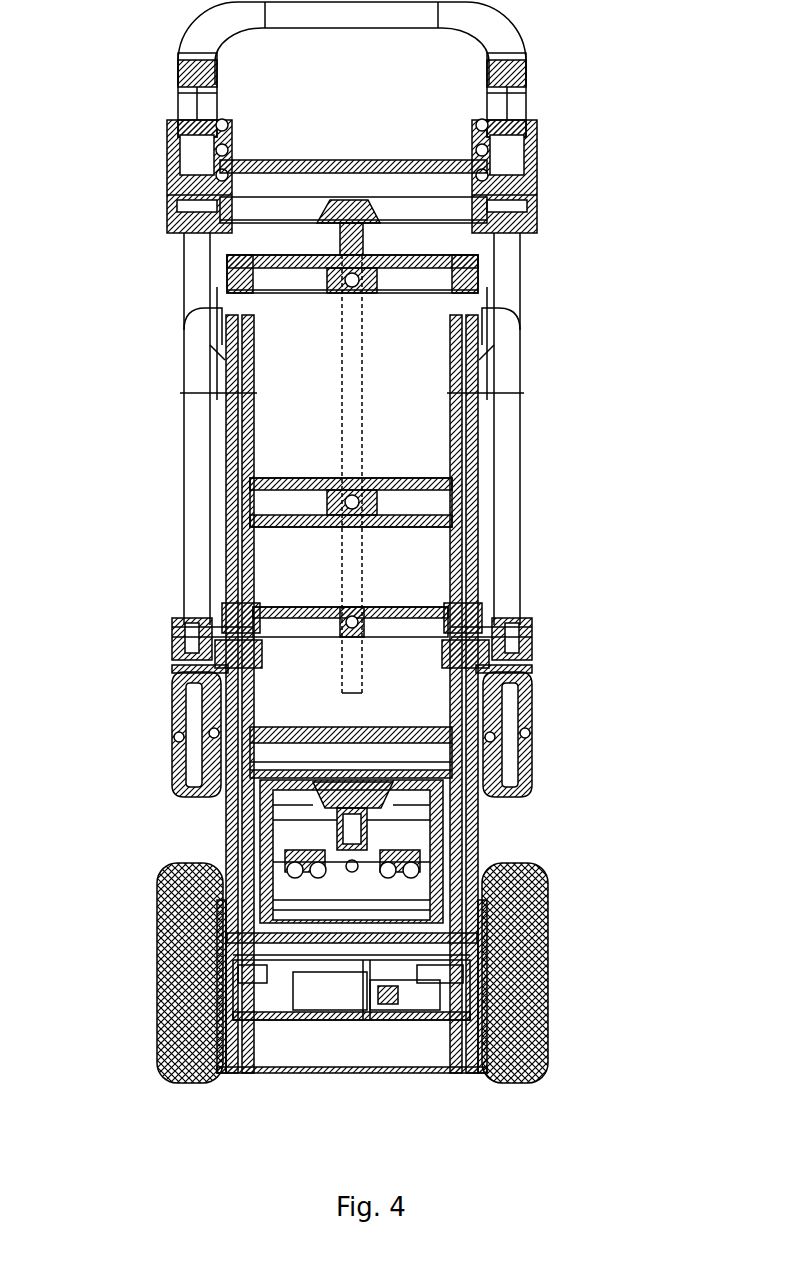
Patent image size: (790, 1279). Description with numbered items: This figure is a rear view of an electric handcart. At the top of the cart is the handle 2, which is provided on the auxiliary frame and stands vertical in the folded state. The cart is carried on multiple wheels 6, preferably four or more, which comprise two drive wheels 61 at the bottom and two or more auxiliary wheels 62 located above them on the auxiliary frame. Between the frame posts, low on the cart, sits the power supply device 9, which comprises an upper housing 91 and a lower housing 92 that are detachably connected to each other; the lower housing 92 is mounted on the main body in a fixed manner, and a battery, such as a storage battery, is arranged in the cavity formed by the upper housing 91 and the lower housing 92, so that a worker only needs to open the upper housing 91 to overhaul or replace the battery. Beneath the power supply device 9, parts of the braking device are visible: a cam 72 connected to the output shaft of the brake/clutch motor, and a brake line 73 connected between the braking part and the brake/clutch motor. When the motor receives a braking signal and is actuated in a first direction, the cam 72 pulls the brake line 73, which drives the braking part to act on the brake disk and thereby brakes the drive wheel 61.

The handle 2 is at (513, 105).
The wheels 6 is at (637, 730).
The drive wheels 61 is at (547, 880).
The auxiliary wheels 62 is at (532, 717).
The power supply device 9 is at (118, 747).
The upper housing 91 is at (227, 812).
The lower housing 92 is at (227, 868).
The cam 72 is at (427, 1030).
The brake line 73 is at (383, 1030).